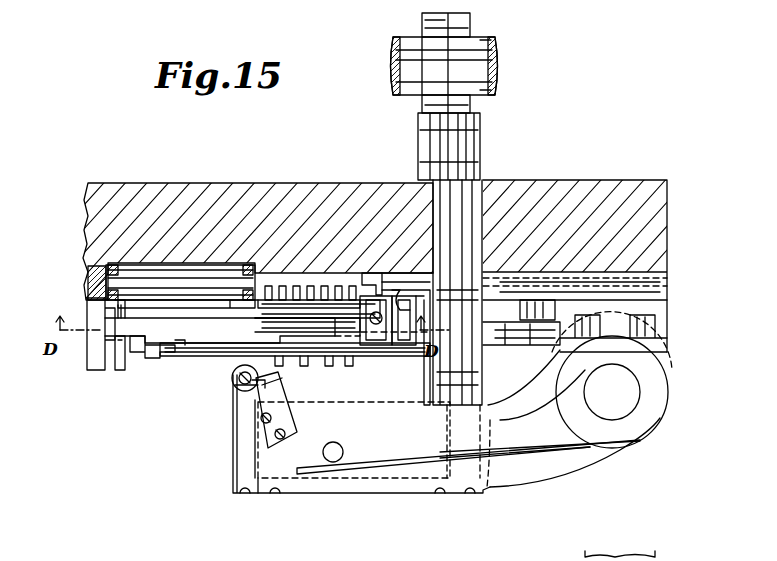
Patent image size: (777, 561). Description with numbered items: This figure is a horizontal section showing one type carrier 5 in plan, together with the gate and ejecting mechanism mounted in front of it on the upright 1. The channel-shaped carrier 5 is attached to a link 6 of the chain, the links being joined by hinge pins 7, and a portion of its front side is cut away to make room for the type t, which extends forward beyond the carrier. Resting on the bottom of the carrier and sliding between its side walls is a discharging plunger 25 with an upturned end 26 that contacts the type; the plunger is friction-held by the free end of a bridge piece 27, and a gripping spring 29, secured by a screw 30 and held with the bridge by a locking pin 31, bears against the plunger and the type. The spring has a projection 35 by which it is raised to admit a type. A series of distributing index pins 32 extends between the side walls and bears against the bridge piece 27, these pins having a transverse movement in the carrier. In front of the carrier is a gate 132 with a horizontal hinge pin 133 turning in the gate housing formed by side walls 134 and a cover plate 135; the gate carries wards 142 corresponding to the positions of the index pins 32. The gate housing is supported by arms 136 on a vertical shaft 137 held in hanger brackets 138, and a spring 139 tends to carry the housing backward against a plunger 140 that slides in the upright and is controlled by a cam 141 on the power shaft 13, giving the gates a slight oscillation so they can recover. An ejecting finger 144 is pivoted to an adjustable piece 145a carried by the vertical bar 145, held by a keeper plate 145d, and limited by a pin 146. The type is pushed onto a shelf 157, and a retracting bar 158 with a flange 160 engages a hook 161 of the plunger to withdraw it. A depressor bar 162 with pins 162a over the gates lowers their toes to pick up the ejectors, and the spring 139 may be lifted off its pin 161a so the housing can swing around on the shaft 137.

The upright 1 is at (556, 185).
The power shaft 13 is at (483, 60).
The cam 141 is at (471, 30).
The plunger 140 is at (463, 192).
The chain link 6 is at (97, 277).
The hinge pin 7 is at (164, 285).
The bridge piece 27 is at (238, 307).
The shelf 157 is at (96, 359).
The gripping spring 29 is at (181, 348).
The type t is at (113, 352).
The upturned end 26 is at (126, 364).
The projection 35 is at (151, 362).
The type carrier 5 is at (216, 354).
The distributing index pin 32 is at (307, 300).
The locking pin 31 is at (371, 327).
The ward 142 is at (327, 368).
The screw 30 is at (373, 344).
The discharging plunger 25 is at (405, 345).
The hook 161 is at (409, 304).
The flange 160 is at (379, 290).
The retracting bar 158 is at (399, 287).
The depressor bar 162 is at (233, 386).
The pin 162a is at (261, 412).
The side wall 134 is at (237, 460).
The cover plate 135 is at (301, 500).
The gate 132 is at (366, 482).
The hinge pin 133 is at (353, 408).
The pin 161a is at (334, 464).
The vertical bar 145 is at (533, 324).
The adjustable piece 145a is at (591, 340).
The pin 146 is at (523, 348).
The ejecting finger 144 is at (508, 374).
The keeper plate 145d is at (581, 402).
The vertical shaft 137 is at (627, 404).
The hanger bracket 138 is at (663, 416).
The arm 136 is at (551, 480).
The spring 139 is at (514, 460).